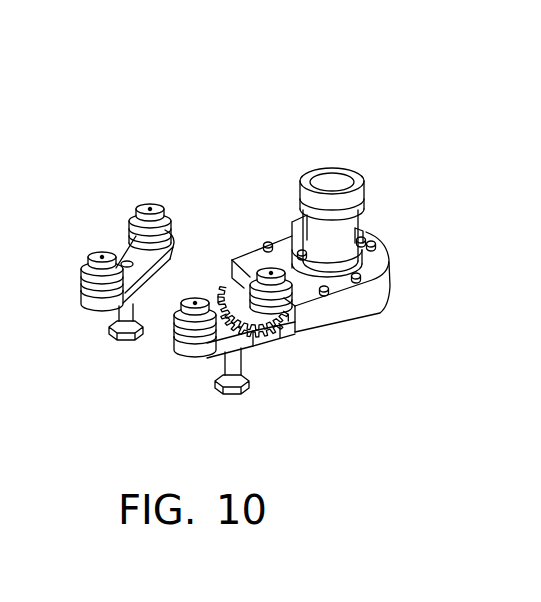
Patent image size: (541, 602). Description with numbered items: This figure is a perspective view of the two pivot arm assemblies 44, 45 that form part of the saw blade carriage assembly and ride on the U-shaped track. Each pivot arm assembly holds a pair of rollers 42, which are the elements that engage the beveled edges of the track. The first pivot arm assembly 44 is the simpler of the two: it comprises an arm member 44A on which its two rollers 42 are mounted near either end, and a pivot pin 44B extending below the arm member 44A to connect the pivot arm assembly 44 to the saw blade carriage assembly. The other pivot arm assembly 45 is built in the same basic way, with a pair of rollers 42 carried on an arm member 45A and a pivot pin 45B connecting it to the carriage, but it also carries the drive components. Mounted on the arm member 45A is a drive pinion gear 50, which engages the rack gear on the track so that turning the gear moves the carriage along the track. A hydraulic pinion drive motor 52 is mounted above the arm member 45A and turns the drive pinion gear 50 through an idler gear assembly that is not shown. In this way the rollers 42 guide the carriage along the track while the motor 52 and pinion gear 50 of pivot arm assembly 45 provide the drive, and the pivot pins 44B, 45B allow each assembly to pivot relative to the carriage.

The rollers 42 is at (170, 220).
The pivot arm assembly 44 is at (102, 206).
The arm member 44A is at (168, 258).
The pivot pin 44B is at (121, 311).
The pivot arm assembly 45 is at (400, 164).
The arm member 45A is at (267, 343).
The pivot pin 45B is at (236, 366).
The drive pinion gear 50 is at (219, 288).
The hydraulic pinion drive motor 52 is at (363, 207).